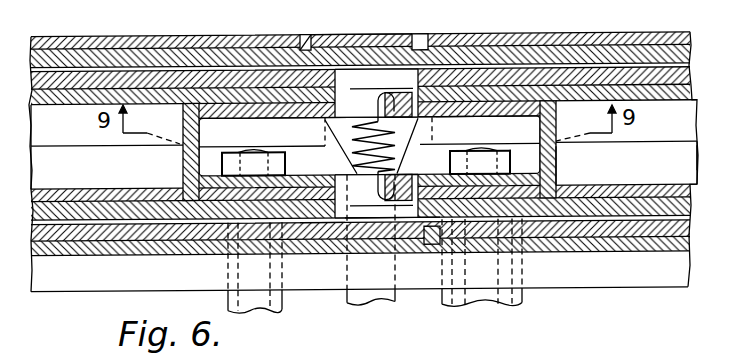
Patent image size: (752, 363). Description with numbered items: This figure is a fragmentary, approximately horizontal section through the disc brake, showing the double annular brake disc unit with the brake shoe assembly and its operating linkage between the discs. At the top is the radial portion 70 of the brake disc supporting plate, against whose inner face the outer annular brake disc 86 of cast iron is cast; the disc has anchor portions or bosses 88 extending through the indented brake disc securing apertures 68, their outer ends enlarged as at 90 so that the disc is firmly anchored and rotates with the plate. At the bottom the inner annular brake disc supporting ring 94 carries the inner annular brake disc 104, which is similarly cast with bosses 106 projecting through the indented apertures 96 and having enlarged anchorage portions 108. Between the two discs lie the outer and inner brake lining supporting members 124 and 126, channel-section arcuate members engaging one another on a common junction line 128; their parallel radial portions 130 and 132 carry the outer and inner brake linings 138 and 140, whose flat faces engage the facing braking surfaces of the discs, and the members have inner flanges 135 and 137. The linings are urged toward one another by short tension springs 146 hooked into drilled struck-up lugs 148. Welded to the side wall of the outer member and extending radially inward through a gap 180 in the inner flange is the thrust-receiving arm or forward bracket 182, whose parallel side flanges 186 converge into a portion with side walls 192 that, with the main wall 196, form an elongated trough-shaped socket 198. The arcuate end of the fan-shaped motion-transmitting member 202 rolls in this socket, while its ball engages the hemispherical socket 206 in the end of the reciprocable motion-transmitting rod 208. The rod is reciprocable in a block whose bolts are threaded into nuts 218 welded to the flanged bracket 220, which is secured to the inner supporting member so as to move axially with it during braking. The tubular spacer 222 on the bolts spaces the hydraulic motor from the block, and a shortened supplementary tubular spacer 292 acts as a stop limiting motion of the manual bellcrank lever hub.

The radial portion 70 is at (690, 36).
The outer annular brake disc 86 is at (690, 51).
The anchor portions or bosses 88 is at (371, 45).
The brake disc securing apertures 68 is at (361, 25).
The enlarged outer ends 90 is at (420, 40).
The outer brake lining 138 is at (690, 72).
The radial portion of outer brake lining supporting member 130 is at (692, 93).
The outer brake lining supporting member 124 is at (53, 111).
The inner brake lining supporting member 126 is at (50, 184).
The inner flange of outer lining supporting member 135 is at (683, 124).
The common junction line 128 is at (698, 147).
The inner flange of inner lining supporting member 137 is at (690, 163).
The radial portion of inner brake lining supporting member 132 is at (692, 188).
The inner brake lining 140 is at (685, 210).
The inner annular brake disc 104 is at (678, 231).
The inner annular brake disc supporting ring 94 is at (680, 243).
The gap 180 is at (182, 113).
The thrust-receiving arm or forward bracket 182 is at (234, 114).
The side flanges 186 is at (198, 131).
The side walls 192 is at (313, 140).
The main wall 196 is at (446, 118).
The nuts 218 is at (366, 162).
The flanged bracket 220 is at (557, 173).
The tension springs 146 is at (352, 147).
The fan-shaped motion-transmitting member 202 is at (404, 132).
The trough-shaped socket 198 is at (349, 76).
The hemispherical socket 206 is at (381, 195).
The drilled struck-up lugs 148 is at (405, 144).
The bosses 106 is at (331, 247).
The indented apertures 96 is at (420, 246).
The enlarged anchorage portions 108 is at (433, 237).
The tubular spacer 222 is at (283, 306).
The reciprocable motion-transmitting rod 208 is at (381, 301).
The supplementary tubular spacer 292 is at (523, 297).